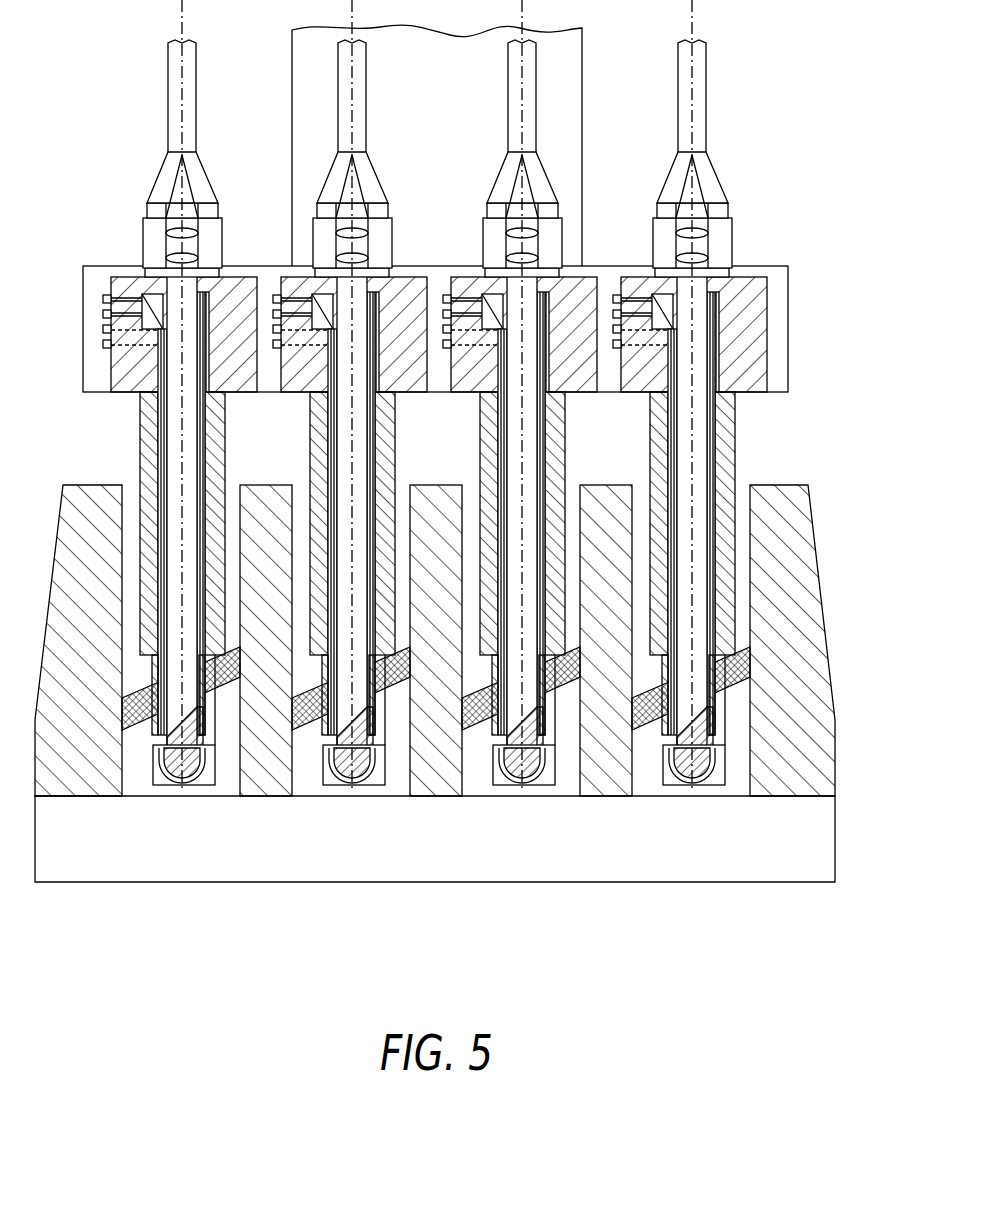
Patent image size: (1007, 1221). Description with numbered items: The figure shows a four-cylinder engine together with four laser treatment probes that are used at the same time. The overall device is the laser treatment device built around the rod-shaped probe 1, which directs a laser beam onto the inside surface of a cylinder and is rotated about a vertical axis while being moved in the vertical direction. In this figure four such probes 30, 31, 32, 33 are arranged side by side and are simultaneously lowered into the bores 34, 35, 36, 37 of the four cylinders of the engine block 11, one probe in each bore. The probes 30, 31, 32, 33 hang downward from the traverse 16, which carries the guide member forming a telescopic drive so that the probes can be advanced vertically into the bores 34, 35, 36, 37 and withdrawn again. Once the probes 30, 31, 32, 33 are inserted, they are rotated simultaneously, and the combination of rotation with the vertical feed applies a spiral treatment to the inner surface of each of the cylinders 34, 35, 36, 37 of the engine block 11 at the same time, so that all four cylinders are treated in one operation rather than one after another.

The rod-shaped probe 1 is at (473, 473).
The engine block 11 is at (473, 716).
The traverse 16 is at (810, 300).
The probe 30 is at (160, 775).
The probe 31 is at (330, 775).
The probe 32 is at (500, 775).
The probe 33 is at (670, 775).
The bore 34 is at (228, 772).
The bore 35 is at (398, 772).
The bore 36 is at (568, 772).
The bore 37 is at (738, 772).